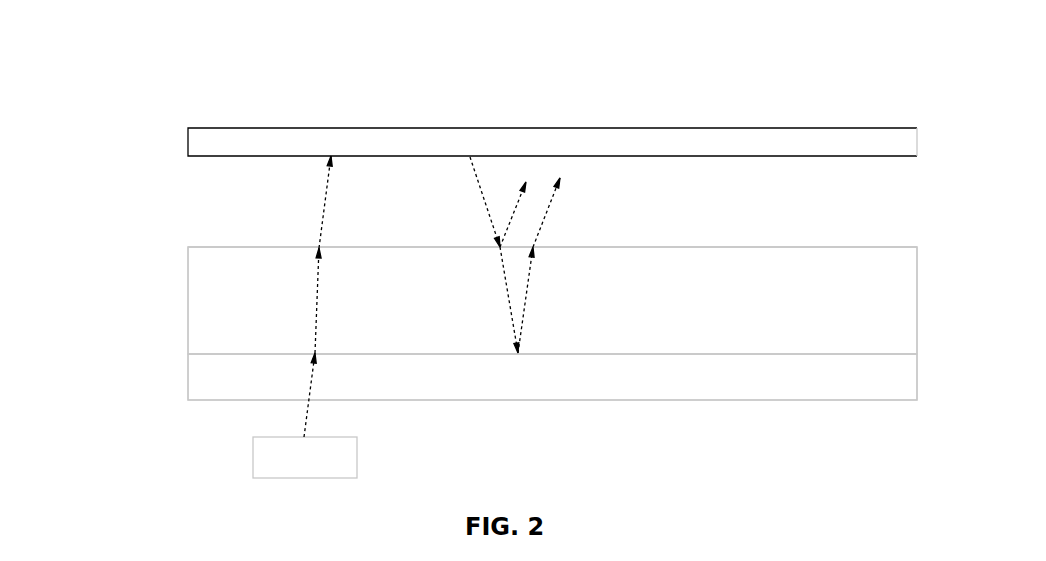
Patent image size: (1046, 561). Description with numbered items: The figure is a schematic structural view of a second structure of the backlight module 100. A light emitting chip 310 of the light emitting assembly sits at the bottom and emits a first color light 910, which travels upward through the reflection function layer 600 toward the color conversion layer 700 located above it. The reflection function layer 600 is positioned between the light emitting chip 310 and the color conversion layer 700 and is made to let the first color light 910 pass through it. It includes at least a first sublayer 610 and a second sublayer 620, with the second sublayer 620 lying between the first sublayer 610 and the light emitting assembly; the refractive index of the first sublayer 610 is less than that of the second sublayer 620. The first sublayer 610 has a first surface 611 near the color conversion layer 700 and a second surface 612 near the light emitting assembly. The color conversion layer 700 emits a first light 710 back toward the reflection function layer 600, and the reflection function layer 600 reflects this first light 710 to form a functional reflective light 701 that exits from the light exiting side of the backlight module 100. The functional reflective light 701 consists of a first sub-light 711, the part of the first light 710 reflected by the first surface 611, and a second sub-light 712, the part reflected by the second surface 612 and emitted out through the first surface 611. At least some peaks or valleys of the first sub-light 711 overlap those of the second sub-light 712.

The backlight module 100 is at (114, 58).
The color conversion layer 700 is at (188, 136).
The functional reflective light 701 is at (348, 47).
The first sub-light 711 is at (452, 147).
The second sub-light 712 is at (481, 216).
The reflection function layer 600 is at (505, 47).
The first sublayer 610 is at (188, 300).
The first surface 611 is at (881, 242).
The second surface 612 is at (860, 360).
The second sublayer 620 is at (188, 375).
The first light 710 is at (467, 255).
The first color light 910 is at (292, 296).
The light emitting chip 310 is at (253, 458).